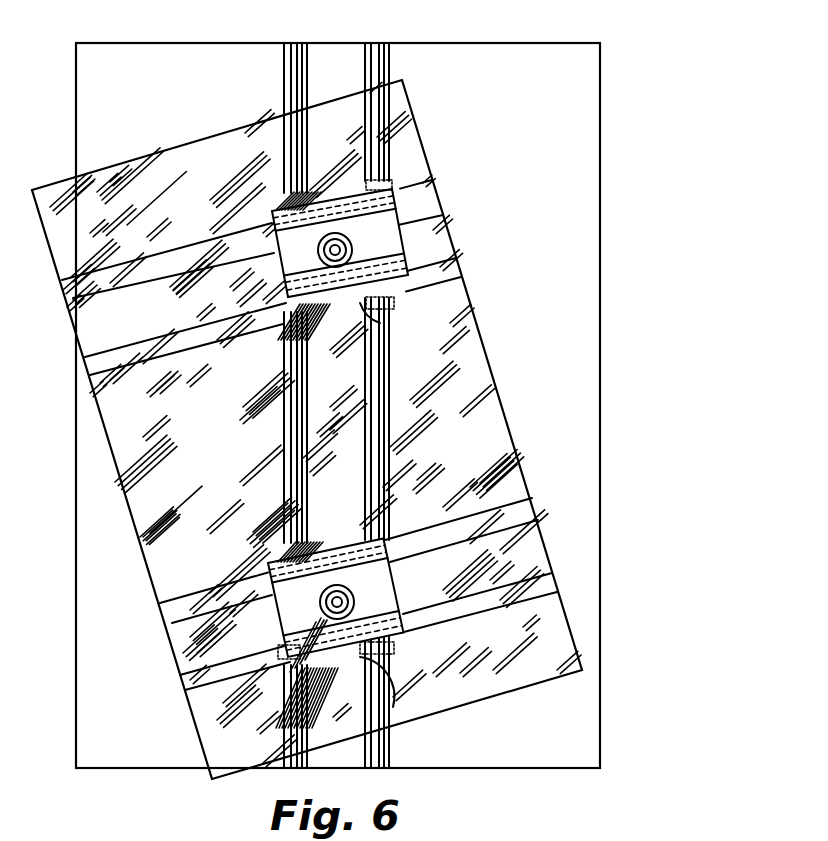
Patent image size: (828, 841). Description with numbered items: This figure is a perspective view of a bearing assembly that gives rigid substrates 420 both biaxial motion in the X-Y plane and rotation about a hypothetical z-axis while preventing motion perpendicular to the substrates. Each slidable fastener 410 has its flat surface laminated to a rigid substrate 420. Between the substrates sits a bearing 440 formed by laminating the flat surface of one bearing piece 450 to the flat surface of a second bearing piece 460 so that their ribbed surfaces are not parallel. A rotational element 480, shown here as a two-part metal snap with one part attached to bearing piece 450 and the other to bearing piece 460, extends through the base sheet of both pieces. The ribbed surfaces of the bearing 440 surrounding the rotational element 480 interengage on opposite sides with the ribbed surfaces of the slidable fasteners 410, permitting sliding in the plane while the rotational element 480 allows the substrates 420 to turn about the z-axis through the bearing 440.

The slidable fastener 410 is at (287, 43).
The rigid substrate 420 is at (402, 108).
The bearing 440 is at (283, 188).
The bearing piece 450 is at (431, 229).
The second bearing piece 460 is at (380, 323).
The rotational element 480 is at (348, 259).